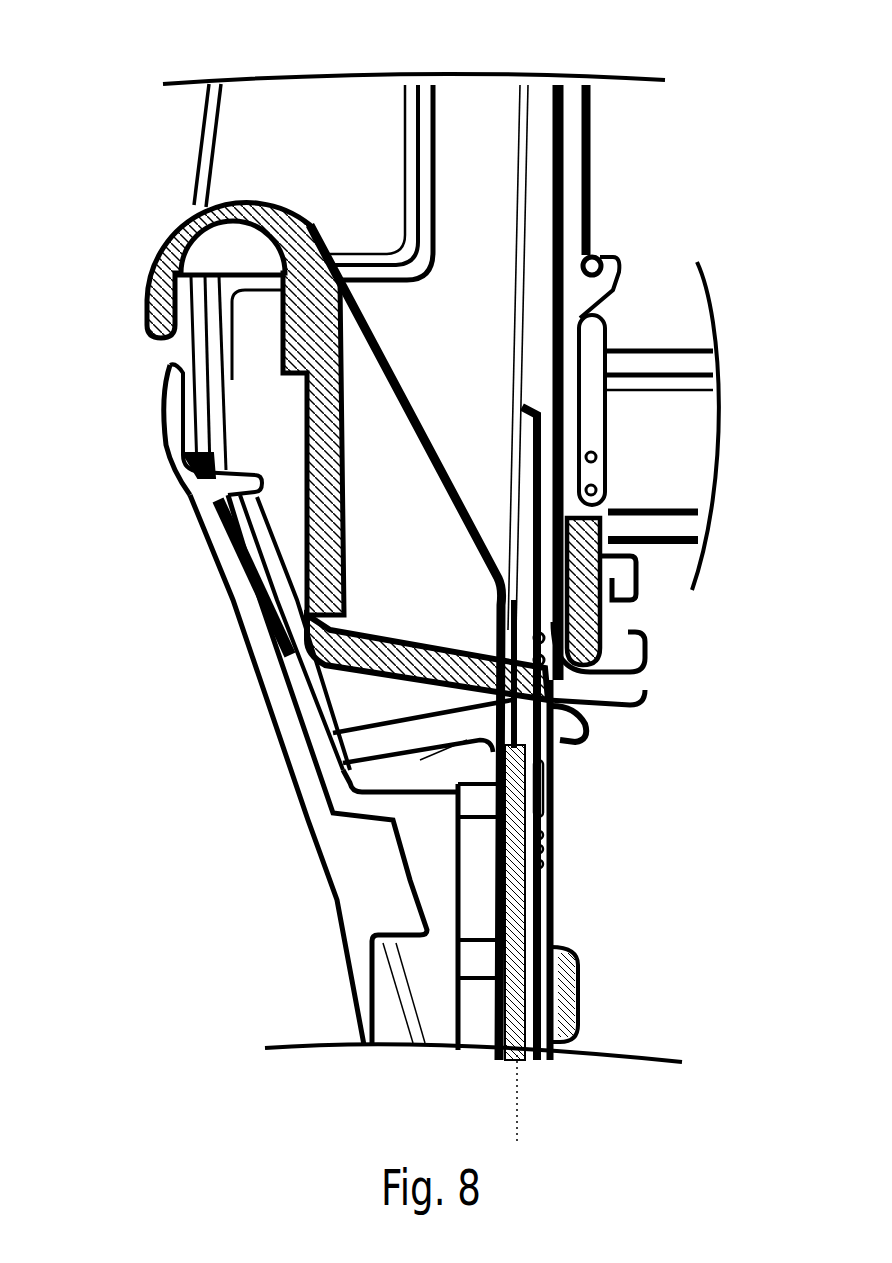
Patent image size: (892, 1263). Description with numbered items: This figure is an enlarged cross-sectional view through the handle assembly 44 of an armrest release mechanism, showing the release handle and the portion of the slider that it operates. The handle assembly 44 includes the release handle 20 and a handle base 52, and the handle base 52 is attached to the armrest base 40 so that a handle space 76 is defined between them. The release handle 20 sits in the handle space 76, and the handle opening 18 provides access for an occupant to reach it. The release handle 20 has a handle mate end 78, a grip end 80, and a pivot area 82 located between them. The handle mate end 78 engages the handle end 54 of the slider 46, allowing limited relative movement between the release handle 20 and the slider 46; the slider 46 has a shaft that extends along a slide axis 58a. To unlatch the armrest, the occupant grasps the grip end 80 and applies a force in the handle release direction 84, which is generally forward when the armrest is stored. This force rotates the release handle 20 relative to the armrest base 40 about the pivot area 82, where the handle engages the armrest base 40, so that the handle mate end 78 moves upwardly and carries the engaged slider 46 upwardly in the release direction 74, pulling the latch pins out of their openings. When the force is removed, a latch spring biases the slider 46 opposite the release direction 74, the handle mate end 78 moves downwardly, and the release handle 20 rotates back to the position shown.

The handle opening 18 is at (240, 146).
The release handle 20 is at (408, 405).
The armrest base 40 is at (307, 805).
The handle assembly 44 is at (650, 168).
The slider 46 is at (607, 967).
The handle base 52 is at (570, 128).
The handle end 54 is at (587, 620).
The slide axis 58a is at (523, 1113).
The release direction 74 is at (743, 702).
The handle space 76 is at (460, 373).
The handle mate end 78 is at (597, 710).
The grip end 80 is at (203, 197).
The pivot area 82 is at (287, 655).
The handle release direction 84 is at (130, 258).